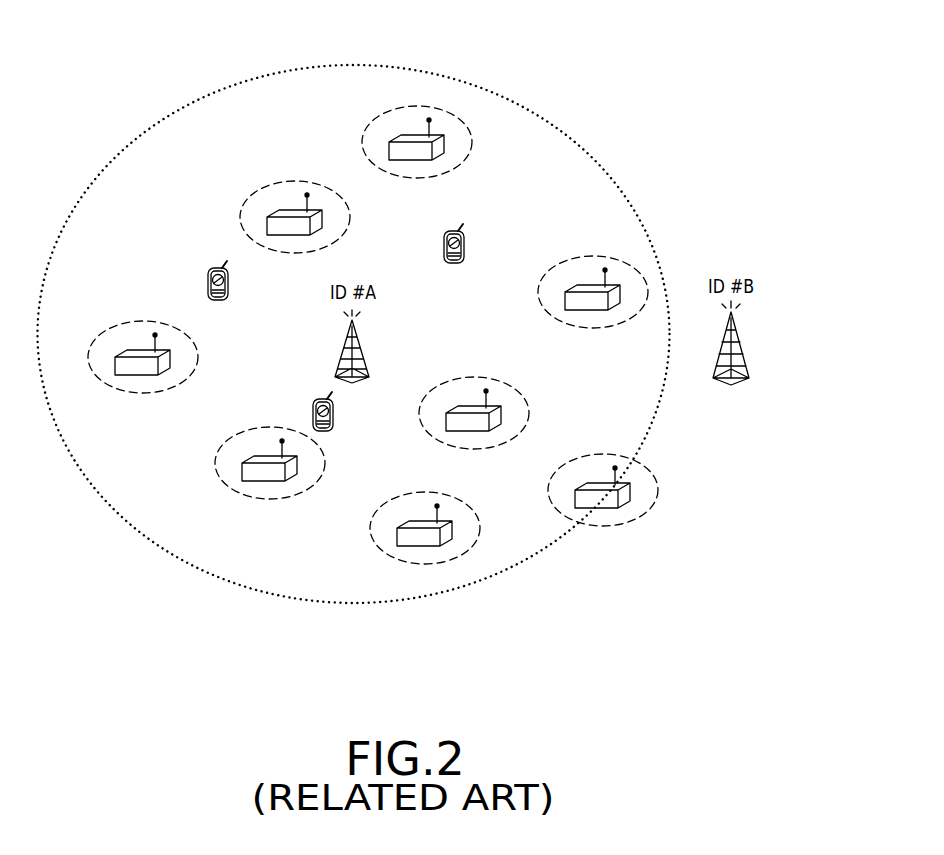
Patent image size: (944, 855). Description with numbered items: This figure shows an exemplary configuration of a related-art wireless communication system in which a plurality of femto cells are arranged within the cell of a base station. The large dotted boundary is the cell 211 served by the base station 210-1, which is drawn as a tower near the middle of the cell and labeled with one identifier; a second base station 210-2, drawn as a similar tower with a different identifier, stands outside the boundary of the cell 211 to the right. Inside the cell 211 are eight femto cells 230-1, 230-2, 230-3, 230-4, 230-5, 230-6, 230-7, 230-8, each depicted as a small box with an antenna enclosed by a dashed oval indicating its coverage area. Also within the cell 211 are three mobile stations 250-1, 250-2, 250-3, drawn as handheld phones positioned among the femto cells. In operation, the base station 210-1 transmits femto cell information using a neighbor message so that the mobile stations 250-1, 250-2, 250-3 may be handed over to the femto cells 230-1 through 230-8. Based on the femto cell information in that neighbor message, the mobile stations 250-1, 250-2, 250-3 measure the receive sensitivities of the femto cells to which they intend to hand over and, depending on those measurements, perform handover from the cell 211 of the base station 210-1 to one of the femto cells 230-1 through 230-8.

The cell 211 is at (353, 62).
The BS 210-1 is at (361, 347).
The base station ID #B 210-2 is at (740, 343).
The femto cell 230-1 is at (472, 139).
The femto cell 230-2 is at (350, 214).
The femto cell 230-3 is at (198, 354).
The femto cell 230-4 is at (538, 289).
The femto cell 230-5 is at (325, 460).
The femto cell 230-6 is at (529, 410).
The femto cell 230-7 is at (370, 525).
The femto cell 230-8 is at (658, 487).
The MS 250-1 is at (229, 283).
The MS 250-2 is at (465, 246).
The MS 250-3 is at (334, 413).